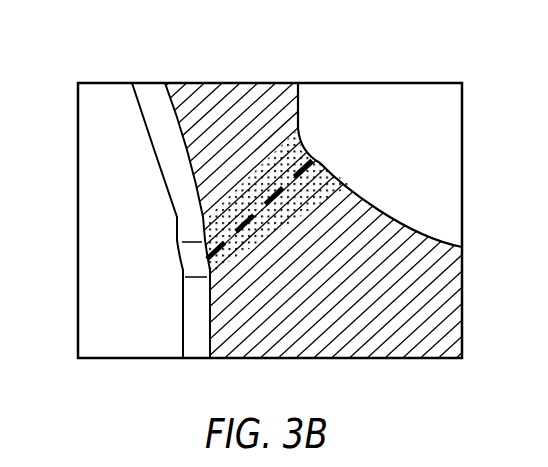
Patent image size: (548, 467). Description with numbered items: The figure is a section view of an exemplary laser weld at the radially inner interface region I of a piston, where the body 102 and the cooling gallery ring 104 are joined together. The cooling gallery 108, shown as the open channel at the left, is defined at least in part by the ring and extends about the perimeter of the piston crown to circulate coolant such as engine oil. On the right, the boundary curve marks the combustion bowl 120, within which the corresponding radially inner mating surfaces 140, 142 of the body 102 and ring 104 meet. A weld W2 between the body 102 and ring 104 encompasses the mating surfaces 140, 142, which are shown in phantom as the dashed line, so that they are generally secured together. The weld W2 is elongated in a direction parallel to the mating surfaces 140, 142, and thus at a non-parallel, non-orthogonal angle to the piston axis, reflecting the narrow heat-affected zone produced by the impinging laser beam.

The body 102 is at (332, 312).
The cooling gallery ring 104 is at (208, 107).
The cooling gallery 108 is at (139, 213).
The combustion bowl 120 is at (375, 204).
The radially inner mating surface of the body 140 is at (253, 230).
The radially inner mating surface of the ring 142 is at (272, 182).
The weld W2 is at (283, 160).
The radially inner interface region I is at (315, 128).